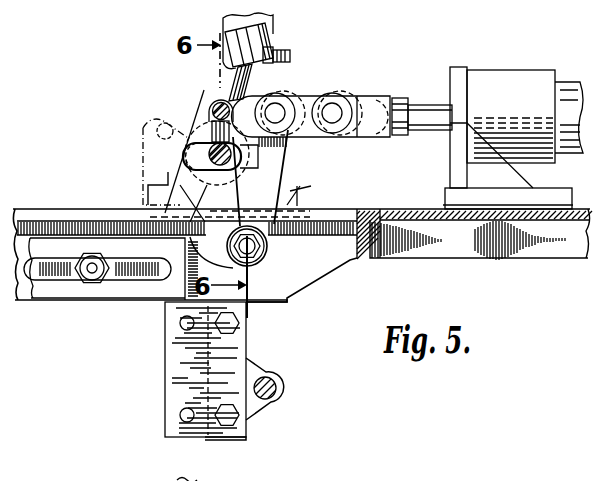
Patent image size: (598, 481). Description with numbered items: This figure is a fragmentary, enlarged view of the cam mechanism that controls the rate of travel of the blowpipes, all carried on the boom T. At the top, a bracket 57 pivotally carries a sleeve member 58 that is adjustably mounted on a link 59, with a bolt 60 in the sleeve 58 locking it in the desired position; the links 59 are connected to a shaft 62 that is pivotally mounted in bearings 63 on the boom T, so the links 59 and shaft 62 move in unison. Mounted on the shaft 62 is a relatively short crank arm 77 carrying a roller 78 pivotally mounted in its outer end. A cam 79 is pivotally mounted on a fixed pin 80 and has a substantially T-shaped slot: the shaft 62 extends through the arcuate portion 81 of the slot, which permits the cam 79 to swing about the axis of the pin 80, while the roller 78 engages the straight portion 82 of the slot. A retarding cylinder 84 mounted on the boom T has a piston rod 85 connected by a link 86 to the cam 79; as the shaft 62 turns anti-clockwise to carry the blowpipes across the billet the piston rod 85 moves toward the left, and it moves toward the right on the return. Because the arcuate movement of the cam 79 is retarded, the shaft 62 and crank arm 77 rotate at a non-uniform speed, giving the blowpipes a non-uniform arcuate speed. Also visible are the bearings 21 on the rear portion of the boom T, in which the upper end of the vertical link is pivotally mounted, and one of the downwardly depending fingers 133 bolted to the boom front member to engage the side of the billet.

The bearings 21 is at (0, 161).
The boom T is at (97, 208).
The bracket 57 is at (273, 19).
The sleeve member 58 is at (240, 31).
The link 59 is at (250, 78).
The bolt 60 is at (291, 55).
The shaft 62 is at (224, 166).
The bearings 63 is at (290, 195).
The crank arm 77 is at (248, 147).
The roller 78 is at (214, 106).
The cam 79 is at (140, 132).
The fixed pin 80 is at (265, 252).
The arcuate portion of slot 81 is at (152, 168).
The straight portion of slot 82 is at (202, 147).
The retarding cylinder 84 is at (527, 78).
The piston rod 85 is at (434, 124).
The link 86 is at (306, 99).
The fingers 133 is at (168, 362).